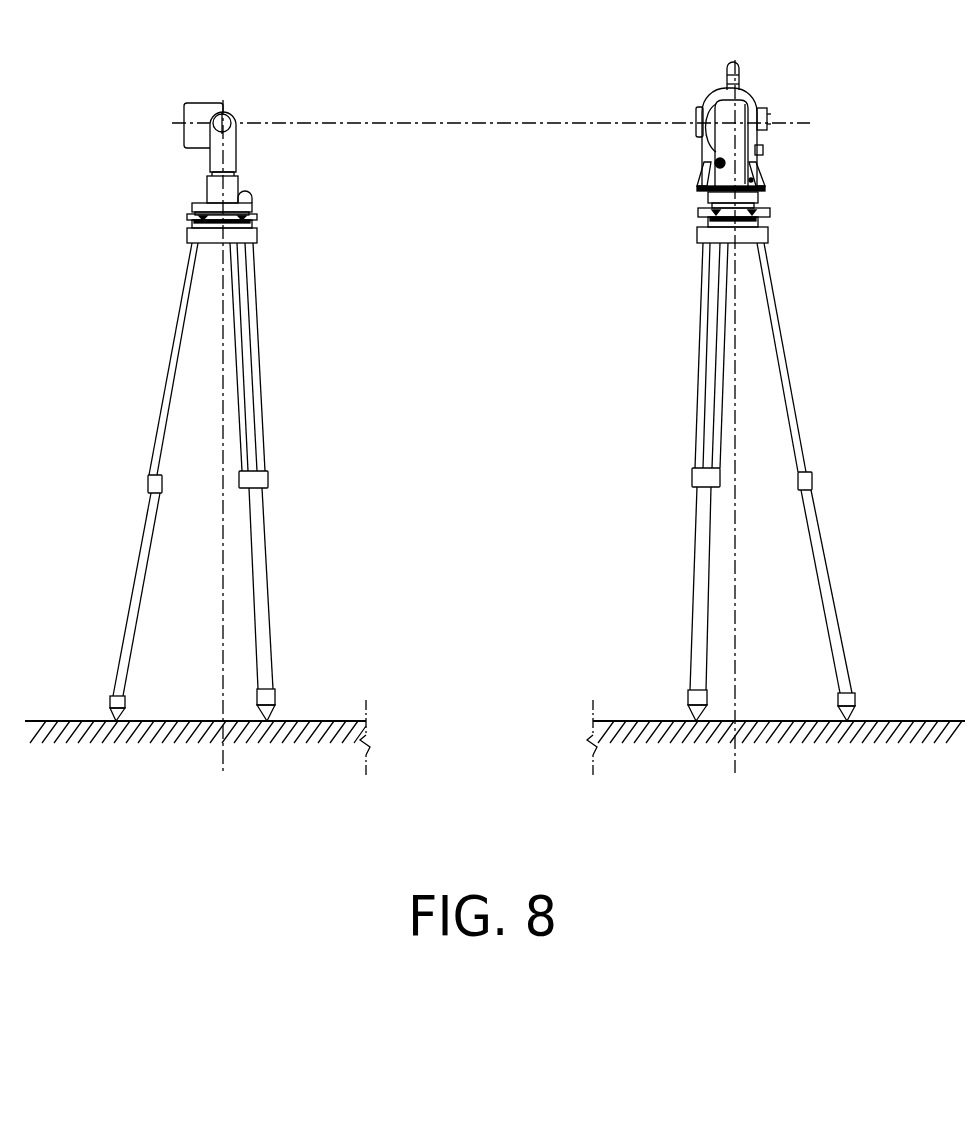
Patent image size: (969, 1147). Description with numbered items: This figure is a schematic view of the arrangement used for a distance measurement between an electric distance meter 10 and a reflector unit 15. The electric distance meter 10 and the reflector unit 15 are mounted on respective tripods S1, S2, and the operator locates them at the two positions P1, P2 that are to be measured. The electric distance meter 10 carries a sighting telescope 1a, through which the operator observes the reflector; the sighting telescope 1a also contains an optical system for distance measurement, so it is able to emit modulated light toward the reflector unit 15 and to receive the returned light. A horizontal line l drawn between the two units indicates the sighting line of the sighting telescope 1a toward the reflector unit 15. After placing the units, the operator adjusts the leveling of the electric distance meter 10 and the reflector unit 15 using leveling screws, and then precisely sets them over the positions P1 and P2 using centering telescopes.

The electric distance meter 10 is at (725, 127).
The sighting telescope 1a is at (698, 120).
The collimation line l is at (785, 123).
The reflector unit 15 is at (207, 158).
The tripod S1 is at (788, 390).
The tripod S2 is at (262, 390).
The position P1 is at (740, 438).
The position P2 is at (228, 458).